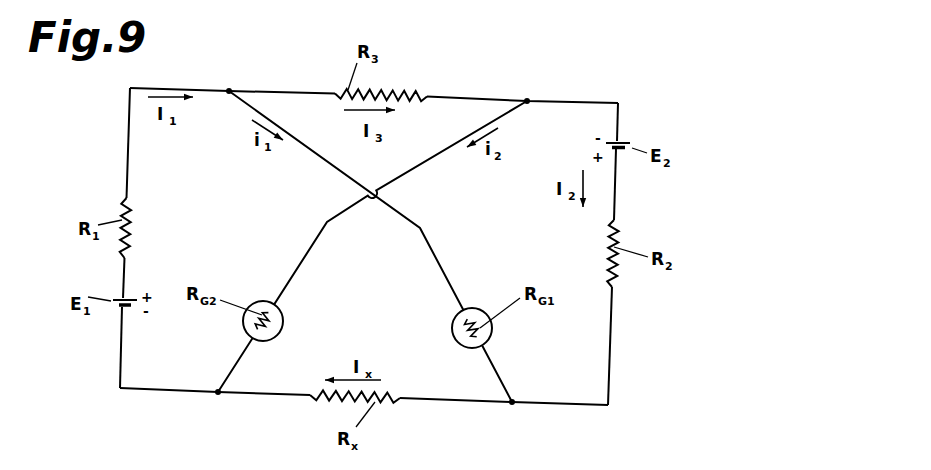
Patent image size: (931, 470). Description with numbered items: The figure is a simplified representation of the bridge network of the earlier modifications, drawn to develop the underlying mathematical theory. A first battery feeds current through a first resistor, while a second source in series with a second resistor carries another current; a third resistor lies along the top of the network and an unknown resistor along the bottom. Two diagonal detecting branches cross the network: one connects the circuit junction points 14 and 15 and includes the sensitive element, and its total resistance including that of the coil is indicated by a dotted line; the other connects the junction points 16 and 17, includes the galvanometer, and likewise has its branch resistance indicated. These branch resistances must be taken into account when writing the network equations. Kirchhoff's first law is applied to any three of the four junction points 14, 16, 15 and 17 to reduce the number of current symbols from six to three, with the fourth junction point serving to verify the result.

The circuit junction point 14 is at (229, 91).
The circuit junction point 15 is at (512, 402).
The circuit junction point 16 is at (527, 101).
The circuit junction point 17 is at (218, 392).